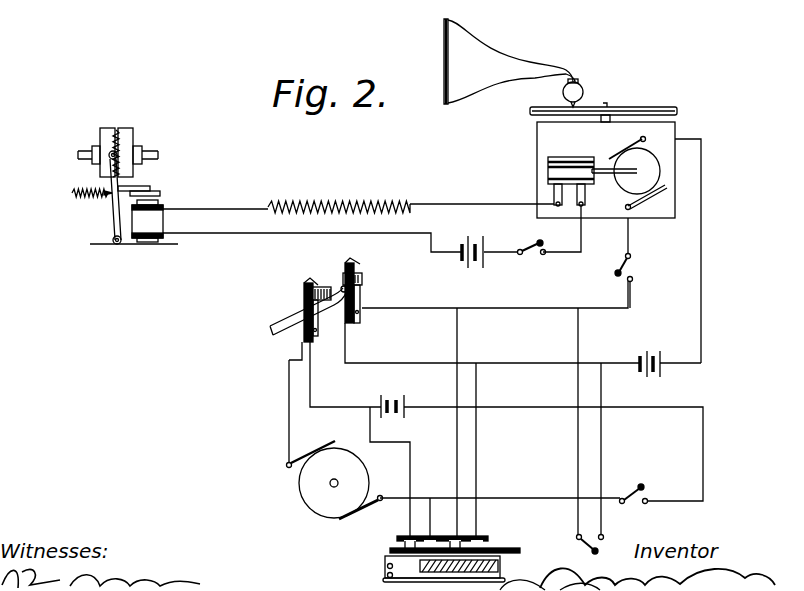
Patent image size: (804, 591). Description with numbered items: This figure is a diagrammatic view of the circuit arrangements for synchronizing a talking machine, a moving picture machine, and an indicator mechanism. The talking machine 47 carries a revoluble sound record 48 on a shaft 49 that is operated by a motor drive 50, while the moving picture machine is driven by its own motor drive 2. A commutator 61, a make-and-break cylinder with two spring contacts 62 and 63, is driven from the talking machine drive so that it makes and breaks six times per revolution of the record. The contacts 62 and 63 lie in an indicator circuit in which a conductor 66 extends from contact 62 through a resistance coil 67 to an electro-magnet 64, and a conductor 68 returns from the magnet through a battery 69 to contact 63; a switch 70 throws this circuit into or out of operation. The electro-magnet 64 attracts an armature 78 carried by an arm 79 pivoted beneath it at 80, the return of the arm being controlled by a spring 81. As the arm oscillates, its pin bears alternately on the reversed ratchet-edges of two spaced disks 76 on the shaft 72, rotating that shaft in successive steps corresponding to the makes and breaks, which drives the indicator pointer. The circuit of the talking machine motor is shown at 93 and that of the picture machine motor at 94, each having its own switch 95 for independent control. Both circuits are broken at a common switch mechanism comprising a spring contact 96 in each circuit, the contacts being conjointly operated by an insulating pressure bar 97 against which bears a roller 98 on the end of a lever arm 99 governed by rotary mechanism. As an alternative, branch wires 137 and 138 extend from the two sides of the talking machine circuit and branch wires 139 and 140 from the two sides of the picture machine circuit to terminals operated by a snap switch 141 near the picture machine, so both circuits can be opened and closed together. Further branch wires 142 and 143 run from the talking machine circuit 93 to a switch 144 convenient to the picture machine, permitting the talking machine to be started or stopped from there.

The motor drive 2 is at (335, 430).
The talking machine 47 is at (668, 132).
The sound record 48 is at (680, 107).
The shaft 49 is at (612, 116).
The motor drive 50 is at (655, 172).
The commutator 61 is at (580, 157).
The spring contact 62 is at (556, 194).
The spring contact 63 is at (585, 196).
The electro-magnet 64 is at (162, 220).
The conductor 66 is at (455, 203).
The resistance coil 67 is at (340, 200).
The conductor 68 is at (232, 233).
The battery 69 is at (472, 240).
The switch 70 is at (532, 256).
The shaft 72 is at (90, 148).
The ratchet-disks 76 is at (108, 130).
The armature 78 is at (155, 190).
The arm 79 is at (111, 215).
The pivot 80 is at (117, 246).
The spring 81 is at (78, 190).
The talking machine circuit 93 is at (630, 238).
The picture machine circuit 94 is at (705, 440).
The switch 95 is at (633, 272).
The spring contact 96 is at (302, 300).
The pressure bar 97 is at (336, 285).
The roller 98 is at (362, 298).
The lever arm 99 is at (288, 336).
The branch wire 137 is at (456, 333).
The branch wire 138 is at (478, 382).
The branch wire 139 is at (411, 444).
The branch wire 140 is at (431, 499).
The snap switch 141 is at (386, 557).
The branch wire 142 is at (579, 332).
The branch wire 143 is at (603, 438).
The switch 144 is at (577, 536).